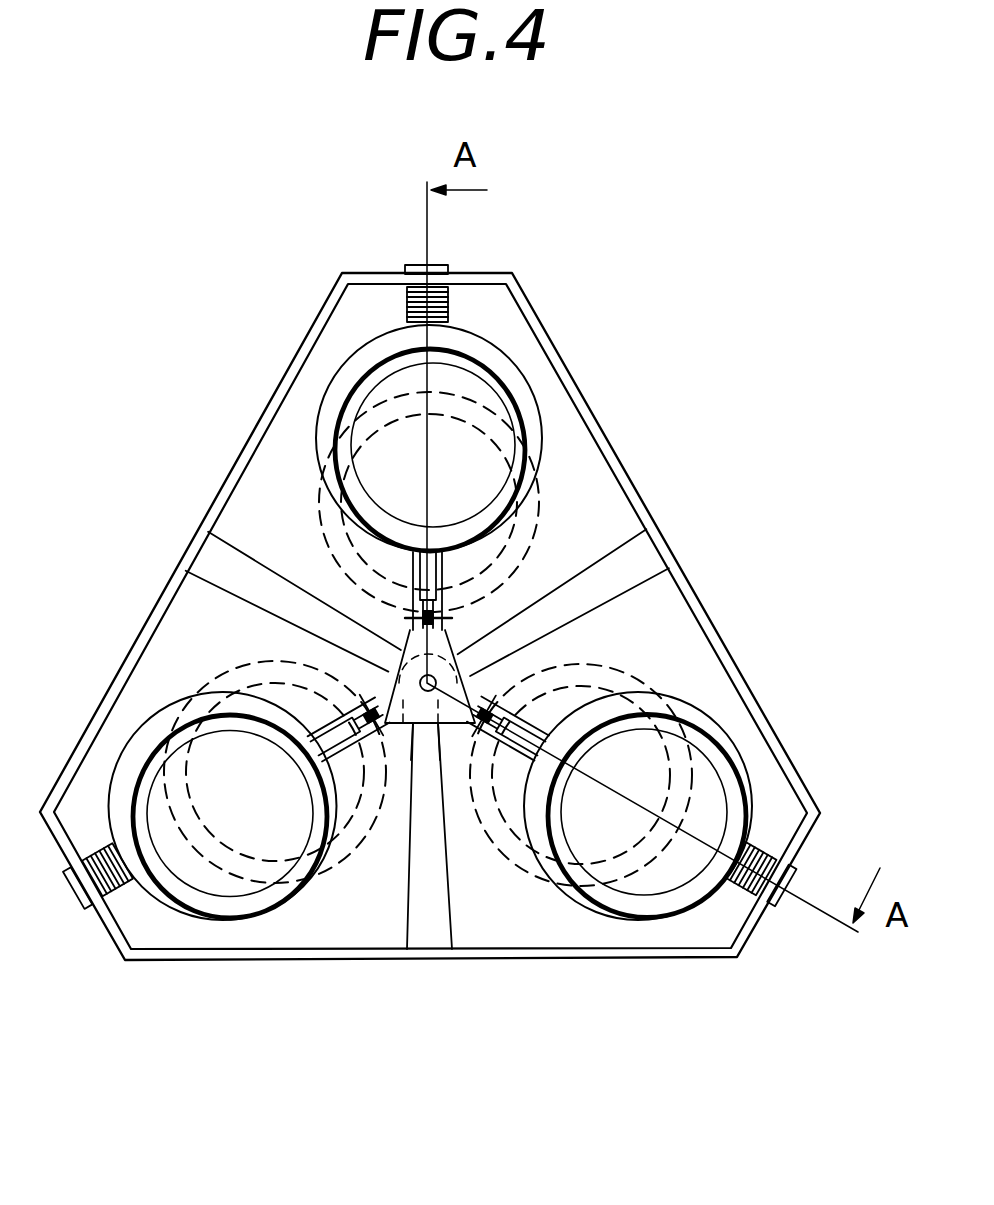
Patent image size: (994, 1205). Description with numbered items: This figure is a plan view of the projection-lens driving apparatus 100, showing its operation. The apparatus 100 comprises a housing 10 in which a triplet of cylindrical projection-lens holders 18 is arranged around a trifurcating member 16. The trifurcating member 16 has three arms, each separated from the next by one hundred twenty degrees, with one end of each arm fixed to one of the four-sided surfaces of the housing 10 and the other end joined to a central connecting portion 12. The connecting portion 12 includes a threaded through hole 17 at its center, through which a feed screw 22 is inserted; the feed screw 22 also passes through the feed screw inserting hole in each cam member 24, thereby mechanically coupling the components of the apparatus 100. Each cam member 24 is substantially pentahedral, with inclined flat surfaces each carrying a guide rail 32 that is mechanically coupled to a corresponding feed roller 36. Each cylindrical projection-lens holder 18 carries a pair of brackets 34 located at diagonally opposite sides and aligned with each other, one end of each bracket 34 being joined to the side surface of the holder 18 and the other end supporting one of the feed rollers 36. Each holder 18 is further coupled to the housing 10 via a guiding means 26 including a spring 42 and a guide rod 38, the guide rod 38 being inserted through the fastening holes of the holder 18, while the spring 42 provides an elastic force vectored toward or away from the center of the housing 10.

The projection-lens driving apparatus 100 is at (430, 567).
The housing 10 is at (672, 566).
The connecting portion 12 is at (437, 694).
The trifurcating member 16 is at (227, 563).
The threaded through hole 17 is at (436, 674).
The cylindrical projection-lens holder 18 is at (510, 383).
The feed screw 22 is at (465, 652).
The cam member 24 is at (412, 835).
The guiding means 26 is at (423, 609).
The guide rail 32 is at (367, 731).
The bracket 34 is at (428, 585).
The feed roller 36 is at (410, 622).
The guide rod 38 is at (418, 266).
The spring 42 is at (408, 307).